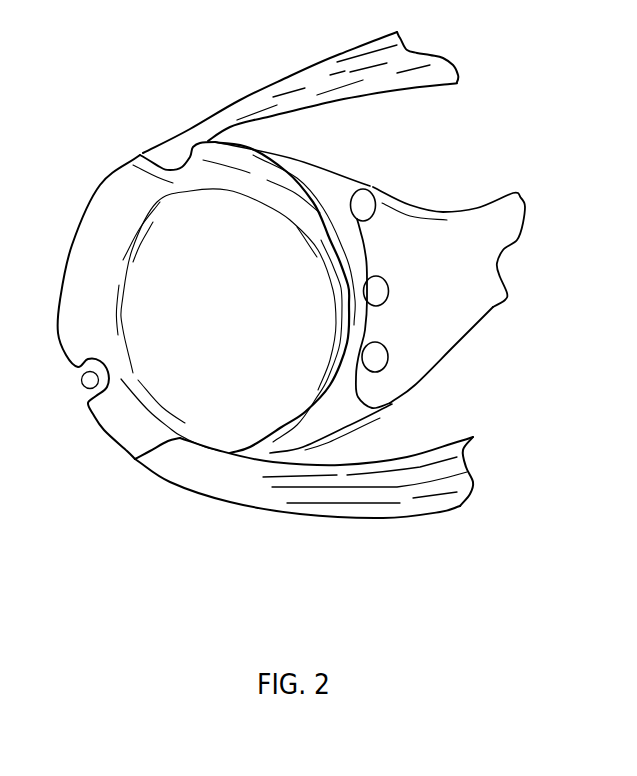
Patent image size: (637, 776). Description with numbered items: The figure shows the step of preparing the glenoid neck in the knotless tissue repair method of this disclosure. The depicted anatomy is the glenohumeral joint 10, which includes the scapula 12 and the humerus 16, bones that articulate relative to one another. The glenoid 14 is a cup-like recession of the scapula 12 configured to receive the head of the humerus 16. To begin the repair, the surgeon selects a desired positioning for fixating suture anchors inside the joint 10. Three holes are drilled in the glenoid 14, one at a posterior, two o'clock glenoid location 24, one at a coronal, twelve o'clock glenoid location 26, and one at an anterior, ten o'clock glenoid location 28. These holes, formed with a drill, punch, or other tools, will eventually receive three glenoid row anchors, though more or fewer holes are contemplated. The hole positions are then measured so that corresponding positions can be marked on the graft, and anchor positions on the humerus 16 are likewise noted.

The glenohumeral joint 10 is at (83, 67).
The scapula 12 is at (487, 242).
The glenoid 14 is at (357, 315).
The humerus 16 is at (80, 245).
The posterior glenoid location 24 is at (398, 358).
The coronal glenoid location 26 is at (400, 290).
The anterior glenoid location 28 is at (369, 189).